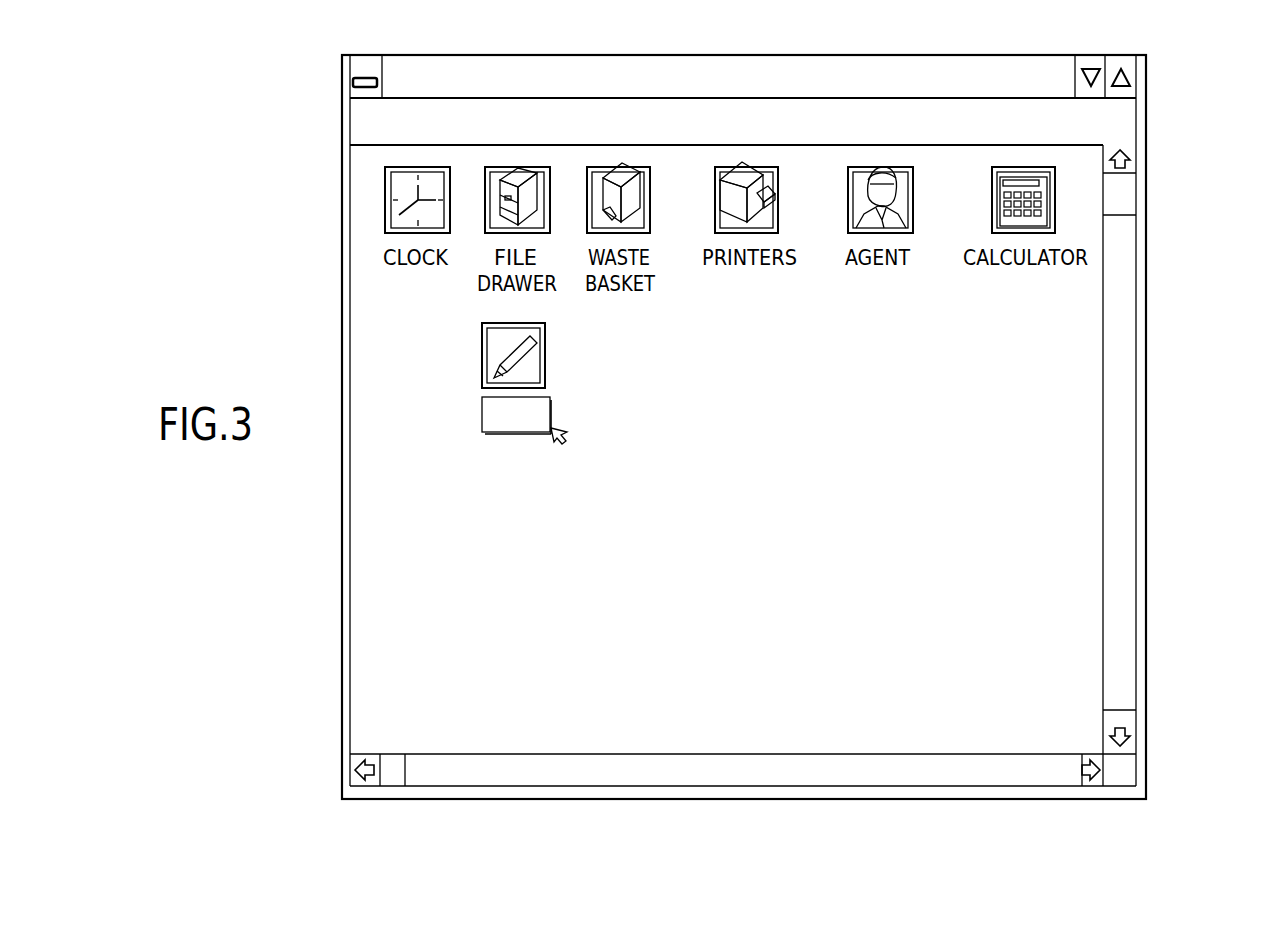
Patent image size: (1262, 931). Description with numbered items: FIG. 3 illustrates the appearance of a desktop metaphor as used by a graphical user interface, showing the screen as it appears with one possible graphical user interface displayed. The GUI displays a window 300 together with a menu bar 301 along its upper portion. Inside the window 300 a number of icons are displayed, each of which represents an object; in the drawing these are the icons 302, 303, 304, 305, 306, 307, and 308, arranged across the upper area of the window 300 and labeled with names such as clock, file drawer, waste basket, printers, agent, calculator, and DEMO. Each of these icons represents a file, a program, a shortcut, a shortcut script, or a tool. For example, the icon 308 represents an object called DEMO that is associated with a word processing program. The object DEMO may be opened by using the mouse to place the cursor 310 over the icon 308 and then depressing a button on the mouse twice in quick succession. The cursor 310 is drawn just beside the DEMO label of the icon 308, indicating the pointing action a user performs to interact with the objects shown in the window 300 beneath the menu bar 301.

The window 300 is at (1146, 652).
The menu bar 301 is at (348, 127).
The icon 302 is at (385, 201).
The icon 303 is at (518, 163).
The icon 304 is at (617, 162).
The icon 305 is at (760, 165).
The icon 306 is at (892, 155).
The icon 307 is at (1013, 167).
The icon 308 is at (482, 347).
The cursor 310 is at (557, 447).